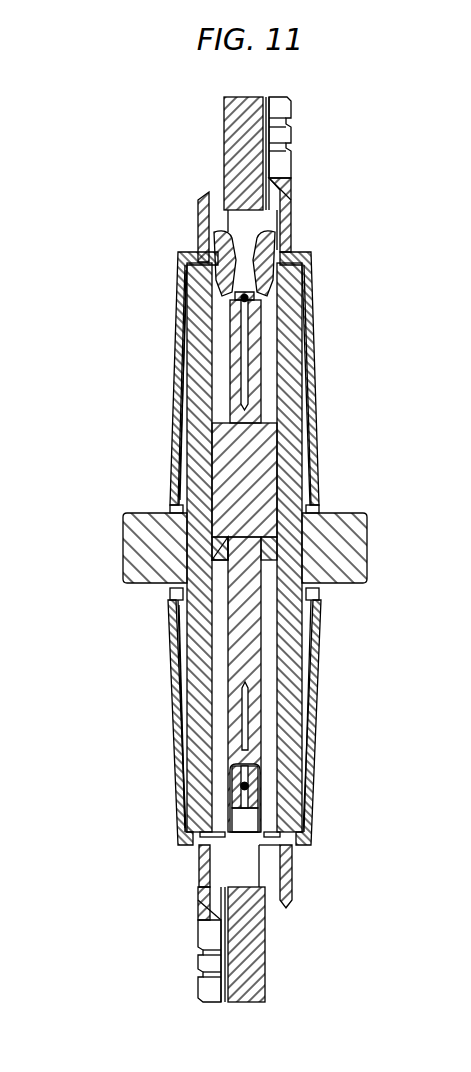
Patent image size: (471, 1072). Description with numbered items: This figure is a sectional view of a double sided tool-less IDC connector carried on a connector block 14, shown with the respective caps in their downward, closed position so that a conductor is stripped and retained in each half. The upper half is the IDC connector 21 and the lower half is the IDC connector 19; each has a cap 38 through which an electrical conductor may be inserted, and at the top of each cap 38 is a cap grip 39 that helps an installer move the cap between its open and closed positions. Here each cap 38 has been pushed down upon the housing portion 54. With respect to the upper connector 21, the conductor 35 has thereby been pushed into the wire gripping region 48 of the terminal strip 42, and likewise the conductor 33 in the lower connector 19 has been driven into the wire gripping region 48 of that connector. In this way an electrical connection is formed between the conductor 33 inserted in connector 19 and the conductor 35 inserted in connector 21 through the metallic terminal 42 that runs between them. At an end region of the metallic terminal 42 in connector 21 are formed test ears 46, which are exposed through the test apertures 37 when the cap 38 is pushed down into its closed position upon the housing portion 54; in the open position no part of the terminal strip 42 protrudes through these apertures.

The connector block 14 is at (367, 520).
The IDC connector 19 is at (108, 746).
The IDC connector 21 is at (108, 286).
The conductor 33 is at (253, 797).
The conductor 35 is at (252, 292).
The test aperture 37 is at (197, 248).
The cap 38 is at (312, 362).
The cap grip 39 is at (284, 157).
The terminal strip 42 is at (262, 478).
The test ears 46 is at (270, 237).
The wire gripping region 48 is at (244, 298).
The housing portion 54 is at (197, 397).